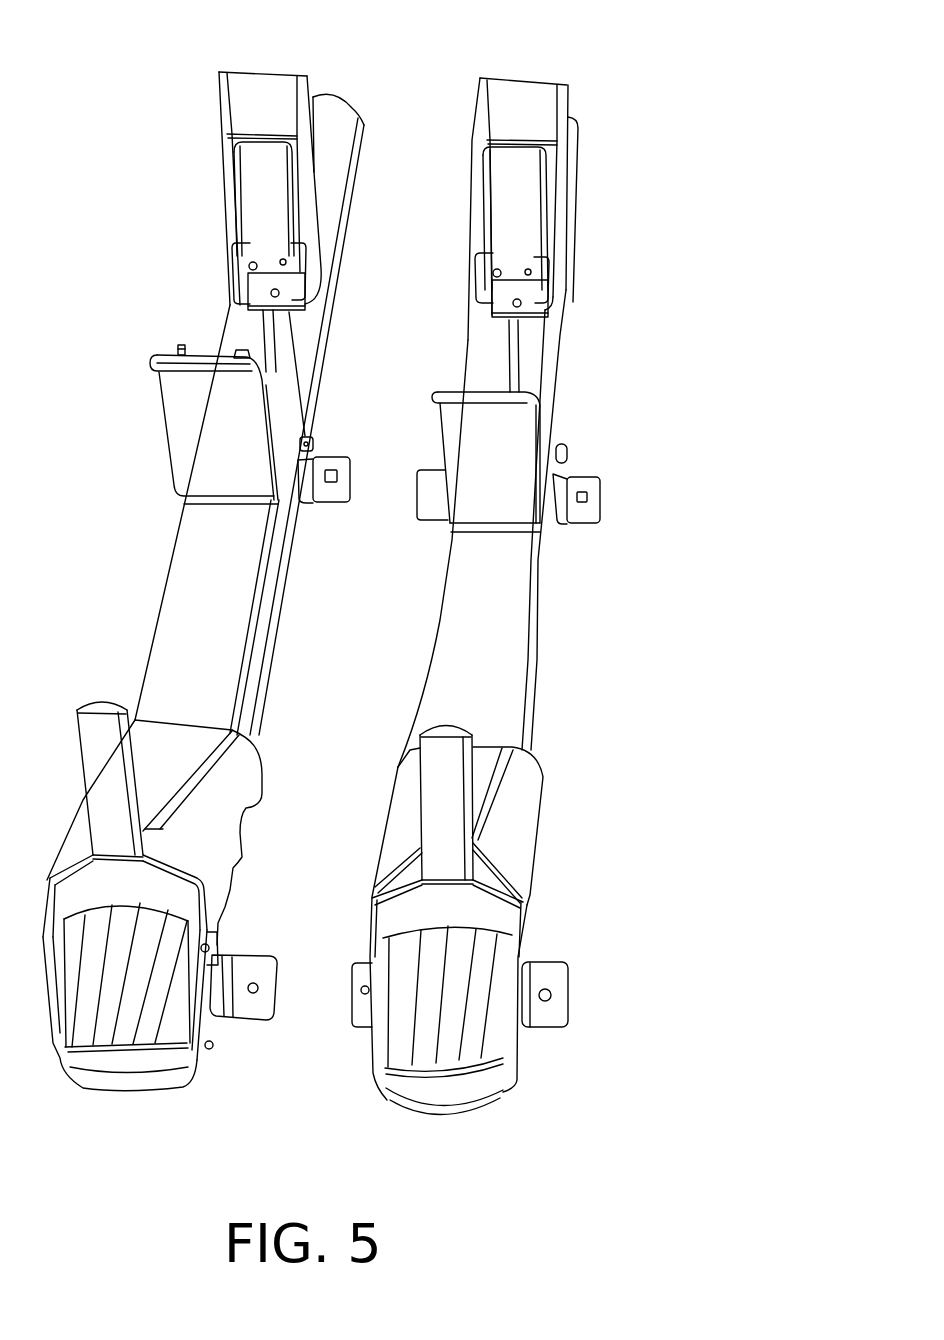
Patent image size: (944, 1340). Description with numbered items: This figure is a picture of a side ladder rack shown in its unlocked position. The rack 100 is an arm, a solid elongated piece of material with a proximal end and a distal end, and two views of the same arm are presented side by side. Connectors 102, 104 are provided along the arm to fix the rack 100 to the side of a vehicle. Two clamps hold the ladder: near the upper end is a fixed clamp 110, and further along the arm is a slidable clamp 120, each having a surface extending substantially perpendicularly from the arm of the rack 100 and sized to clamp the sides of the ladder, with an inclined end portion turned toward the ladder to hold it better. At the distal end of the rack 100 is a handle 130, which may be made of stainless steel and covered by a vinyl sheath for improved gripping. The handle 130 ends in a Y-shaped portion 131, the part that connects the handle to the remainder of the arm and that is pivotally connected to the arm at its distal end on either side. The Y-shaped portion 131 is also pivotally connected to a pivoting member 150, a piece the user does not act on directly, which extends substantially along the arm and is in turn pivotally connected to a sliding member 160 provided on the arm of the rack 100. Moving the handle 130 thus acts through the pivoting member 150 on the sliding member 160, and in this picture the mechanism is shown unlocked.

The rack 100 is at (293, 363).
The connector 102 is at (337, 495).
The connector 104 is at (253, 1007).
The fixed clamp 110 is at (263, 90).
The slidable clamp 120 is at (193, 415).
The handle 130 is at (110, 757).
The Y-shaped portion 131 is at (130, 894).
The pivoting member 150 is at (187, 777).
The sliding member 160 is at (218, 682).